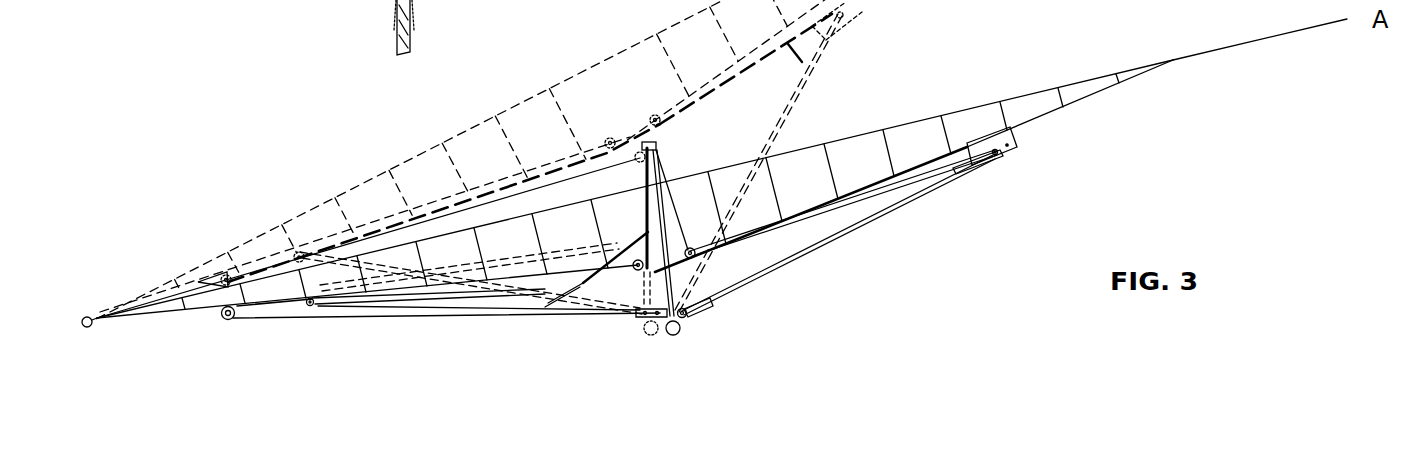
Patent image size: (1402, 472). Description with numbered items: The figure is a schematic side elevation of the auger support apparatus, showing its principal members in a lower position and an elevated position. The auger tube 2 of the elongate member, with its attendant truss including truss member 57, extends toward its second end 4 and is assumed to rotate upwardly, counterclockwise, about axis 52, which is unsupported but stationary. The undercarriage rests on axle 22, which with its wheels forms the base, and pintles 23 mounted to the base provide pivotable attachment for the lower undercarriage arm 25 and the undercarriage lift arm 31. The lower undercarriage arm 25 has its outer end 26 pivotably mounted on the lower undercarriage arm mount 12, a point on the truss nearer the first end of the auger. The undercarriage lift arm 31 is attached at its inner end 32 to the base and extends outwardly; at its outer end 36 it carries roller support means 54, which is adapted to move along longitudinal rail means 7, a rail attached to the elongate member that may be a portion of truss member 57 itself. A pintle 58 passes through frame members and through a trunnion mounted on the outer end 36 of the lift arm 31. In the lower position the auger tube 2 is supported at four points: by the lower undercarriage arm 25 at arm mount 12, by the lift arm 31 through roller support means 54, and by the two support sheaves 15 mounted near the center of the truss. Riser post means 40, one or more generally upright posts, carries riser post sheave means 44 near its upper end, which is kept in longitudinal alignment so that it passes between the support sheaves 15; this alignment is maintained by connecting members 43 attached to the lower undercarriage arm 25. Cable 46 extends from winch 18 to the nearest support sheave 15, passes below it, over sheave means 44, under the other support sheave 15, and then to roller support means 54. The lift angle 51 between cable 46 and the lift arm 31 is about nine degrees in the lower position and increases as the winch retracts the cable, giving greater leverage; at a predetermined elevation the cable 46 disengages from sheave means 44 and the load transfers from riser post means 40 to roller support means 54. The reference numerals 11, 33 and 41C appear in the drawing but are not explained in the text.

The auger tube 2 is at (955, 115).
The second end 4 is at (1314, 28).
The longitudinal rail means 7 is at (860, 190).
The wing in raised position 11 is at (618, 97).
The lower undercarriage arm mount 12 is at (297, 250).
The support sheaves 15 is at (690, 247).
The winch 18 is at (222, 315).
The axle 22 is at (655, 336).
The pintles 23 is at (648, 312).
The lower undercarriage arm 25 is at (413, 307).
The outer end 26 is at (330, 306).
The undercarriage lift arm 31 is at (772, 132).
The inner end 32 is at (692, 314).
The hub pivot 33 is at (686, 318).
The outer end 36 is at (977, 160).
The riser post means 40 is at (660, 178).
The upper bracket 41C is at (412, 33).
The connecting members 43 is at (577, 280).
The riser post sheave means 44 is at (658, 148).
The cable 46 is at (367, 233).
The lift angle 51 is at (798, 65).
The axis 52 is at (85, 318).
The roller support means 54 is at (1005, 137).
The truss member 57 is at (487, 187).
The pintle 58 is at (998, 156).